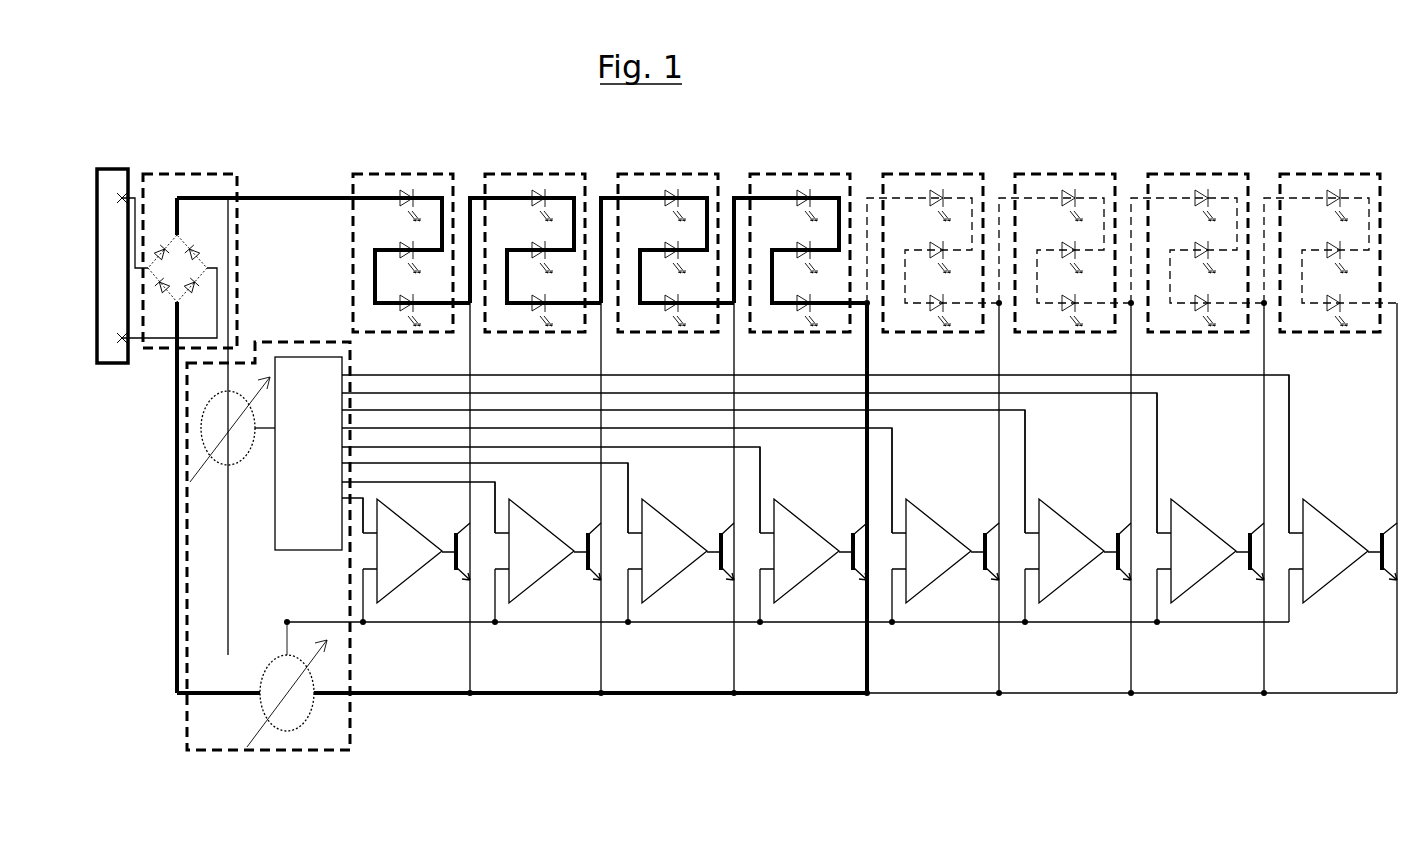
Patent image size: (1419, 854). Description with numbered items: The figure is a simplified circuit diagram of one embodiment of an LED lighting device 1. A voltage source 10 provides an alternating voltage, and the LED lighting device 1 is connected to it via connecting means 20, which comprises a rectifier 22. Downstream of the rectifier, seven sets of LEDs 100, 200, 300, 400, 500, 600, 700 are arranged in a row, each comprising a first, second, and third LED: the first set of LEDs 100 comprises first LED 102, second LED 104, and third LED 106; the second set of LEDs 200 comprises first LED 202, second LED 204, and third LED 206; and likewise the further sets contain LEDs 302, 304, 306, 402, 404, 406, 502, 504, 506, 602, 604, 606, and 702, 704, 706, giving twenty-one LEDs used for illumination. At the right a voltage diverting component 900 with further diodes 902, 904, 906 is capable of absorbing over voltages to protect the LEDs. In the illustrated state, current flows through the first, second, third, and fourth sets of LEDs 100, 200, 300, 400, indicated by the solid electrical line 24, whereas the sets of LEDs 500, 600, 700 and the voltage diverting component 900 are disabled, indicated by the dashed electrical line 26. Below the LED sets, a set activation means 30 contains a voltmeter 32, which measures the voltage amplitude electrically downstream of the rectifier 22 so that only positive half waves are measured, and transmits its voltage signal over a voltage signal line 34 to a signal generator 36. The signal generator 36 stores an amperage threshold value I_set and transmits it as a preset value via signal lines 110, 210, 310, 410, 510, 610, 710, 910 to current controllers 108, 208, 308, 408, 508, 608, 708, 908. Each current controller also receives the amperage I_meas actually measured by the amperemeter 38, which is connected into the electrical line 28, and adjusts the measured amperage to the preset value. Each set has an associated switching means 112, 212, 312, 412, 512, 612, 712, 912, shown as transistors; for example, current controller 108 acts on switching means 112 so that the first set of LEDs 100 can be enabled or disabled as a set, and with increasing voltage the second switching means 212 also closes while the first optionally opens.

The LED lighting device 1 is at (1056, 746).
The voltage source 10 is at (117, 170).
The connecting means 20 is at (204, 401).
The rectifier 22 is at (200, 260).
The solid electrical line 24 is at (290, 197).
The dashed electrical line 26 is at (866, 196).
The electrical line 28 is at (428, 694).
The set activation means 30 is at (228, 570).
The voltmeter 32 is at (210, 398).
The voltage signal line 34 is at (268, 431).
The signal generator 36 is at (283, 552).
The amperemeter 38 is at (290, 732).
The first set of LEDs 100 is at (361, 214).
The first LED 102 is at (410, 196).
The second LED 104 is at (404, 246).
The third LED 106 is at (404, 300).
The current controller 108 is at (416, 585).
The signal line 110 is at (365, 500).
The switching means 112 is at (453, 584).
The second set of LEDs 200 is at (533, 233).
The first LED 202 is at (542, 196).
The second LED 204 is at (523, 258).
The third LED 206 is at (547, 305).
The current controller 208 is at (548, 575).
The signal line 210 is at (497, 492).
The switching means 212 is at (585, 584).
The third set of LEDs 300 is at (666, 233).
The first LED 302 is at (675, 196).
The second LED 304 is at (656, 258).
The third LED 306 is at (680, 305).
The current controller 308 is at (681, 567).
The signal line 310 is at (630, 475).
The switching means 312 is at (718, 584).
The fourth set of LEDs 400 is at (798, 233).
The first LED 402 is at (807, 196).
The second LED 404 is at (788, 258).
The third LED 406 is at (812, 305).
The current controller 408 is at (813, 562).
The signal line 410 is at (762, 465).
The switching means 412 is at (850, 584).
The fifth set of LEDs 500 is at (933, 233).
The first LED 502 is at (940, 196).
The second LED 504 is at (921, 258).
The third LED 506 is at (945, 305).
The current controller 508 is at (945, 550).
The signal line 510 is at (894, 445).
The switching means 512 is at (982, 584).
The sixth set of LEDs 600 is at (1065, 233).
The first LED 602 is at (1072, 196).
The second LED 604 is at (1053, 258).
The third LED 606 is at (1077, 305).
The current controller 608 is at (1078, 542).
The signal line 610 is at (1027, 428).
The switching means 612 is at (1115, 584).
The seventh set of LEDs 700 is at (1197, 233).
The first LED 702 is at (1205, 196).
The second LED 704 is at (1186, 258).
The third LED 706 is at (1210, 305).
The current controller 708 is at (1210, 535).
The signal line 710 is at (1159, 412).
The switching means 712 is at (1247, 584).
The voltage diverting component 900 is at (1330, 233).
The further diode 902 is at (1337, 196).
The further diode 904 is at (1318, 258).
The further diode 906 is at (1342, 305).
The current controller 908 is at (1343, 533).
The signal line 910 is at (1291, 412).
The switching means 912 is at (1379, 584).